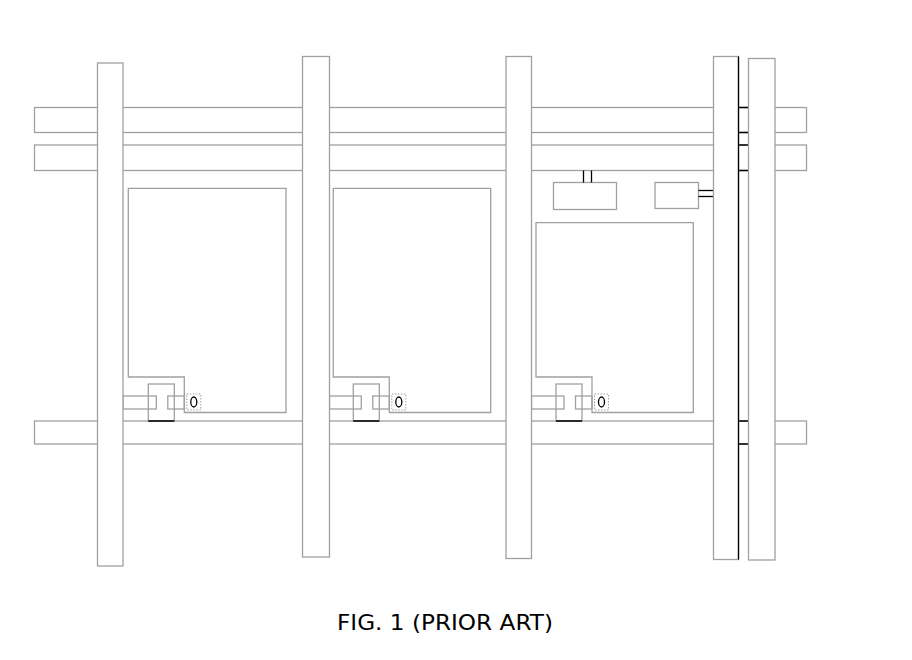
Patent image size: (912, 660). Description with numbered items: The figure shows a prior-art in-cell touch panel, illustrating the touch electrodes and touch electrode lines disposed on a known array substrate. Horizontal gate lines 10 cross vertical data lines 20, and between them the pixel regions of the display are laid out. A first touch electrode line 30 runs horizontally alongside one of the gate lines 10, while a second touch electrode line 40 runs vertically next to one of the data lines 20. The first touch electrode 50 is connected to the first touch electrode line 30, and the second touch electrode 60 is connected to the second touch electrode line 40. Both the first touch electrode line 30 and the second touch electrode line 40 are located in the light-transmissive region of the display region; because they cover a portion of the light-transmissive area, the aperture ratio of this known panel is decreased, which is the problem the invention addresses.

The gate line 10 is at (580, 122).
The data line 20 is at (110, 82).
The first touch electrode line 30 is at (629, 158).
The second touch electrode line 40 is at (718, 487).
The first touch electrode 50 is at (689, 199).
The second touch electrode 60 is at (688, 200).